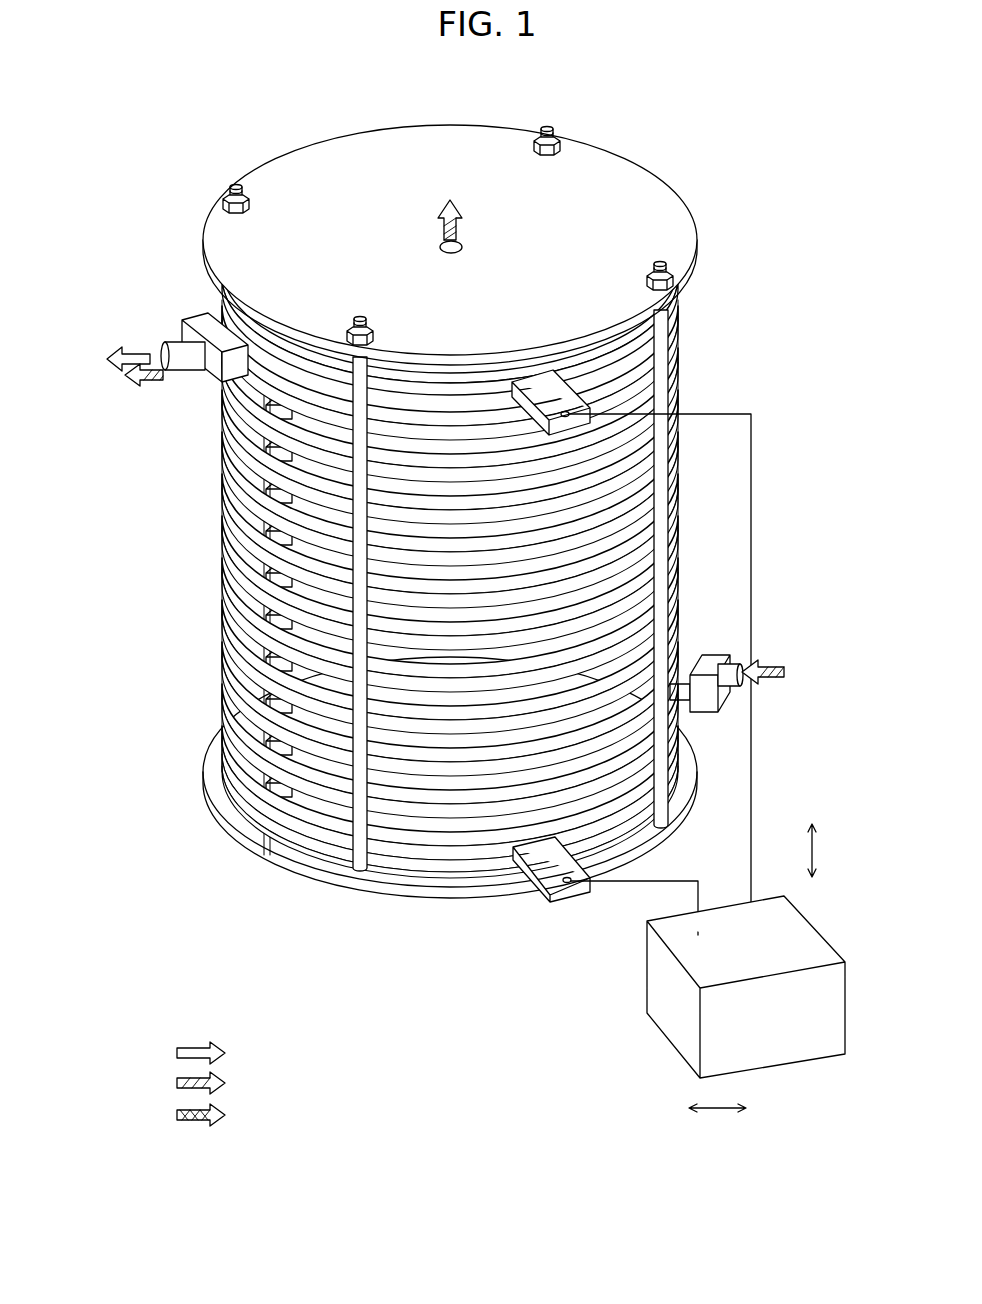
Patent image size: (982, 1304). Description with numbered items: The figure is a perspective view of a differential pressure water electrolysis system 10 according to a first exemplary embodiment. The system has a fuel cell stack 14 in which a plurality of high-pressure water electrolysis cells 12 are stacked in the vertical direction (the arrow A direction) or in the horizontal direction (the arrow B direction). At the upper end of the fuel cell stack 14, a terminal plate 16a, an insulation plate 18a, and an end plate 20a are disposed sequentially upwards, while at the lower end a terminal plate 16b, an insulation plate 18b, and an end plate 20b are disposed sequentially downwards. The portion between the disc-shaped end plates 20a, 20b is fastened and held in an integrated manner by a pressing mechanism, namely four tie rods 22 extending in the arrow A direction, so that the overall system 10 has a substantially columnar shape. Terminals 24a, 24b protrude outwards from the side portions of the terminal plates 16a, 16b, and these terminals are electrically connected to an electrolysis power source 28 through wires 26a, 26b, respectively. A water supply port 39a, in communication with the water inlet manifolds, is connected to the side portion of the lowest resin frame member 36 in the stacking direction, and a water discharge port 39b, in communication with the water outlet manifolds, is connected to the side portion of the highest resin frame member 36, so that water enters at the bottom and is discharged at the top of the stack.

The differential pressure water electrolysis system 10 is at (534, 79).
The high-pressure water electrolysis cell 12 is at (231, 510).
The fuel cell stack 14 is at (401, 583).
The terminal plate 16a is at (457, 393).
The terminal plate 16b is at (485, 857).
The insulation plate 18a is at (490, 372).
The insulation plate 18b is at (430, 870).
The end plate 20a is at (613, 168).
The end plate 20b is at (395, 903).
The tie rod 22 is at (357, 866).
The terminal 24a is at (540, 384).
The terminal 24b is at (562, 896).
The wire 26a is at (718, 412).
The wire 26b is at (617, 884).
The electrolysis power source 28 is at (672, 1027).
The resin frame member 36 is at (258, 370).
The water supply port 39a is at (718, 662).
The water discharge port 39b is at (176, 340).